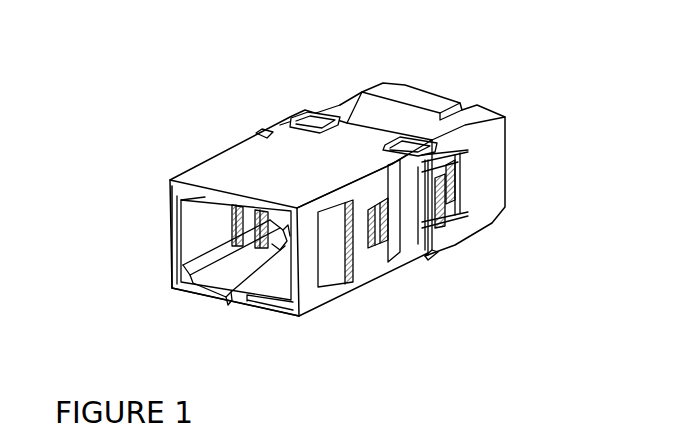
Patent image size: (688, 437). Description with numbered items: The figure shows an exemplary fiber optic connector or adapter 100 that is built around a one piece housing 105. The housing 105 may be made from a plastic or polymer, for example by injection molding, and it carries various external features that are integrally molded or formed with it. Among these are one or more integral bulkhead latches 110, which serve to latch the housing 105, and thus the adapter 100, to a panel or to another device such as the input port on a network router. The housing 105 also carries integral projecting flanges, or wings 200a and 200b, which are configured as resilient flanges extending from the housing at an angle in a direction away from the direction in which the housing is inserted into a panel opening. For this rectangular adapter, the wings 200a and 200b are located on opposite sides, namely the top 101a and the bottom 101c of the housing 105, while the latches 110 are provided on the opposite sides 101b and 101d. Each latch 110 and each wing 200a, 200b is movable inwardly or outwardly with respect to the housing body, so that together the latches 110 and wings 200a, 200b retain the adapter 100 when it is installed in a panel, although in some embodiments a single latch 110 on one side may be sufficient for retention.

The fiber optic connector or adapter 100 is at (146, 88).
The top side of housing 101a is at (233, 178).
The side of housing 101b is at (360, 267).
The bottom side of housing 101c is at (200, 305).
The side of housing 101d is at (163, 250).
The one piece housing 105 is at (172, 184).
The integral bulkhead latch 110 is at (447, 198).
The wing 200a is at (412, 138).
The wing 200b is at (428, 252).